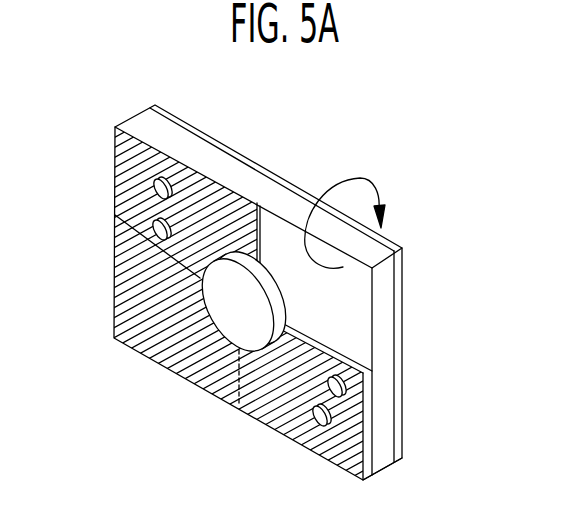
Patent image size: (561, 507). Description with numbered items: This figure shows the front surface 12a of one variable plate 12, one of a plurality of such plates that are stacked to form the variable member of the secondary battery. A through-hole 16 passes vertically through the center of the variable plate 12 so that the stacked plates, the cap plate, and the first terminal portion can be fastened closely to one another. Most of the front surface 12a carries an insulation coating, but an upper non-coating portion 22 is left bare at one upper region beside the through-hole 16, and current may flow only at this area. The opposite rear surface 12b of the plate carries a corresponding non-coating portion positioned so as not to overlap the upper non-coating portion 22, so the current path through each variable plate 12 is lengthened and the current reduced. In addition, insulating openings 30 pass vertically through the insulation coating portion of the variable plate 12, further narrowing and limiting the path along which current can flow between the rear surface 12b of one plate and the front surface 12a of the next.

The variable plate 12 is at (114, 93).
The front surface 12a is at (121, 155).
The rear surface 12b is at (197, 126).
The through-hole 16 is at (243, 313).
The upper non-coating portion 22 is at (352, 303).
The insulating opening 30 is at (153, 235).